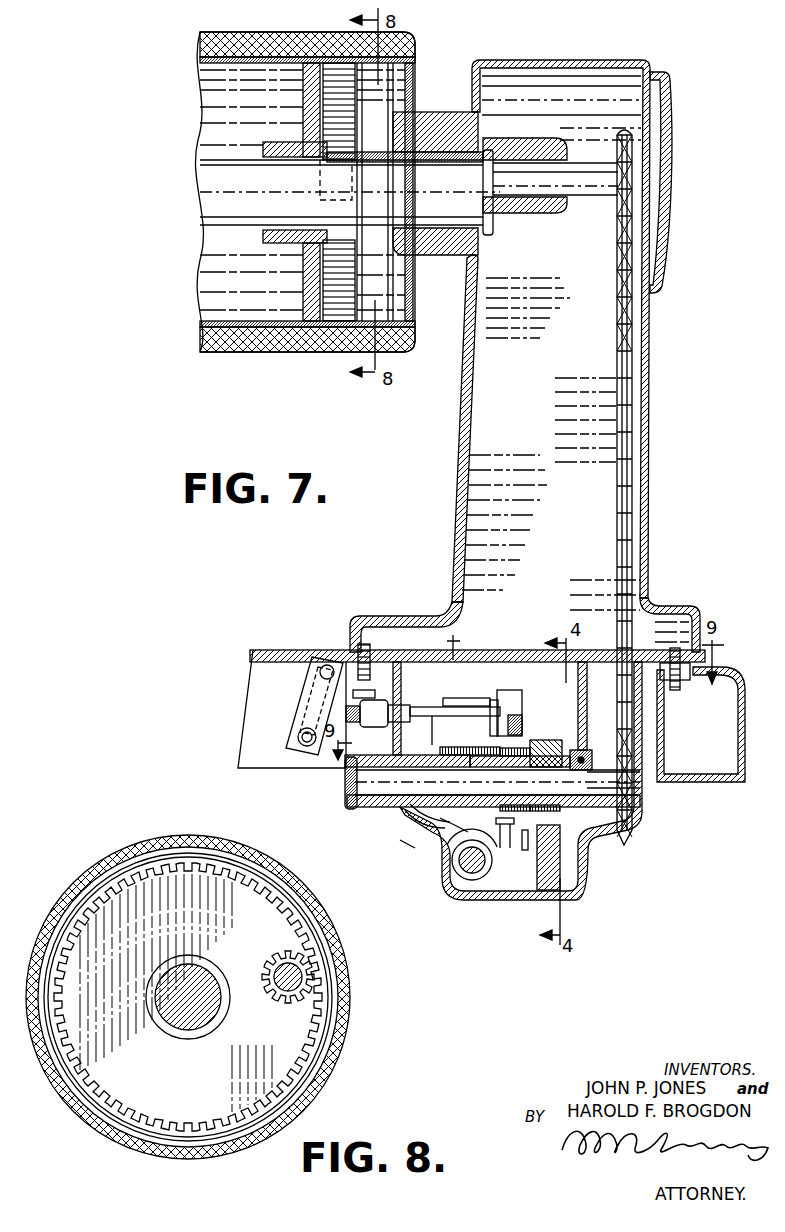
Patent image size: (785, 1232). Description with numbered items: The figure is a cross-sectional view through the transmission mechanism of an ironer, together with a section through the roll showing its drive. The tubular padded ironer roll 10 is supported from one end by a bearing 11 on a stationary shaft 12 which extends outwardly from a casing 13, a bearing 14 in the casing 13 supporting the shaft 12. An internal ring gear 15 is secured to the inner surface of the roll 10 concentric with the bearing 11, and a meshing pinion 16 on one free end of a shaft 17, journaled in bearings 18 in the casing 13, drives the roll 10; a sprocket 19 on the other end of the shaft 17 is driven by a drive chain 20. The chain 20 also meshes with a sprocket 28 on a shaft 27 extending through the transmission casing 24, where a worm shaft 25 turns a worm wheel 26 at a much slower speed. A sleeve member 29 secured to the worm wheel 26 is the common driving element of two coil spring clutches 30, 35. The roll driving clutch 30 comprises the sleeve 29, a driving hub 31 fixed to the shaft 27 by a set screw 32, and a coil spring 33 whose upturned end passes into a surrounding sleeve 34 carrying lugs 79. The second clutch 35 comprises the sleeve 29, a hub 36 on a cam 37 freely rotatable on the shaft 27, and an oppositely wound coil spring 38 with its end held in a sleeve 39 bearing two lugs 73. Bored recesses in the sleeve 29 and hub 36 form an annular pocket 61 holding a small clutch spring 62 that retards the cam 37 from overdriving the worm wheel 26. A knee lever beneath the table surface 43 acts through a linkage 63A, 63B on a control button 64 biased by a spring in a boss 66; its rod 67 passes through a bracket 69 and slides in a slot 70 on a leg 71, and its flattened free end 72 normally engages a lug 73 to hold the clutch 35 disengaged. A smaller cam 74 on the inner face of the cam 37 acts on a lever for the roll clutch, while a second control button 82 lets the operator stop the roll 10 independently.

In FIG. 7, the ironer roll 10 is at (207, 355).
In FIG. 8, the ironer roll 10 is at (338, 1050).
In FIG. 7, the bearing 11 is at (265, 232).
In FIG. 8, the bearing 11 is at (172, 962).
In FIG. 7, the shaft 12 is at (230, 218).
In FIG. 8, the shaft 12 is at (197, 975).
In FIG. 7, the casing 13 is at (518, 60).
In FIG. 7, the bearing 14 is at (437, 163).
In FIG. 7, the internal ring gear 15 is at (303, 110).
In FIG. 8, the internal ring gear 15 is at (262, 893).
In FIG. 7, the pinion 16 is at (345, 170).
In FIG. 8, the pinion 16 is at (270, 990).
In FIG. 7, the shaft 17 is at (580, 166).
In FIG. 8, the shaft 17 is at (278, 965).
In FIG. 7, the bearings 18 is at (546, 152).
In FIG. 7, the sprocket 19 is at (617, 186).
In FIG. 7, the drive chain 20 is at (617, 326).
In FIG. 7, the casing 24 is at (474, 898).
In FIG. 7, the worm shaft 25 is at (462, 868).
In FIG. 7, the worm wheel 26 is at (448, 845).
In FIG. 7, the shaft 27 is at (605, 788).
In FIG. 7, the sprocket 28 is at (633, 785).
In FIG. 7, the sleeve member 29 is at (455, 825).
In FIG. 7, the roll driving clutch 30 is at (404, 850).
In FIG. 7, the driving hub 31 is at (396, 812).
In FIG. 7, the set screw 32 is at (414, 775).
In FIG. 7, the coil spring 33 is at (418, 830).
In FIG. 7, the sleeve 34 is at (443, 815).
In FIG. 7, the spring clutch 35 is at (590, 850).
In FIG. 7, the hub 36 is at (570, 757).
In FIG. 7, the cam 37 is at (546, 890).
In FIG. 7, the coil spring 38 is at (536, 745).
In FIG. 7, the sleeve 39 is at (528, 745).
In FIG. 7, the table surface 43 is at (253, 650).
In FIG. 7, the annular pocket 61 is at (510, 805).
In FIG. 7, the clutch spring 62 is at (540, 805).
In FIG. 7, the linkage 63A is at (300, 730).
In FIG. 7, the linkage 63B is at (312, 684).
In FIG. 7, the control button 64 is at (362, 700).
In FIG. 7, the boss 66 is at (398, 712).
In FIG. 7, the rod 67 is at (432, 707).
In FIG. 7, the bracket 69 is at (455, 698).
In FIG. 7, the slot 70 is at (500, 700).
In FIG. 7, the leg 71 is at (494, 705).
In FIG. 7, the free end 72 is at (519, 715).
In FIG. 7, the lugs 73 is at (502, 840).
In FIG. 7, the cam 74 is at (525, 850).
In FIG. 7, the lugs 79 is at (455, 745).
In FIG. 7, the control button 82 is at (345, 777).